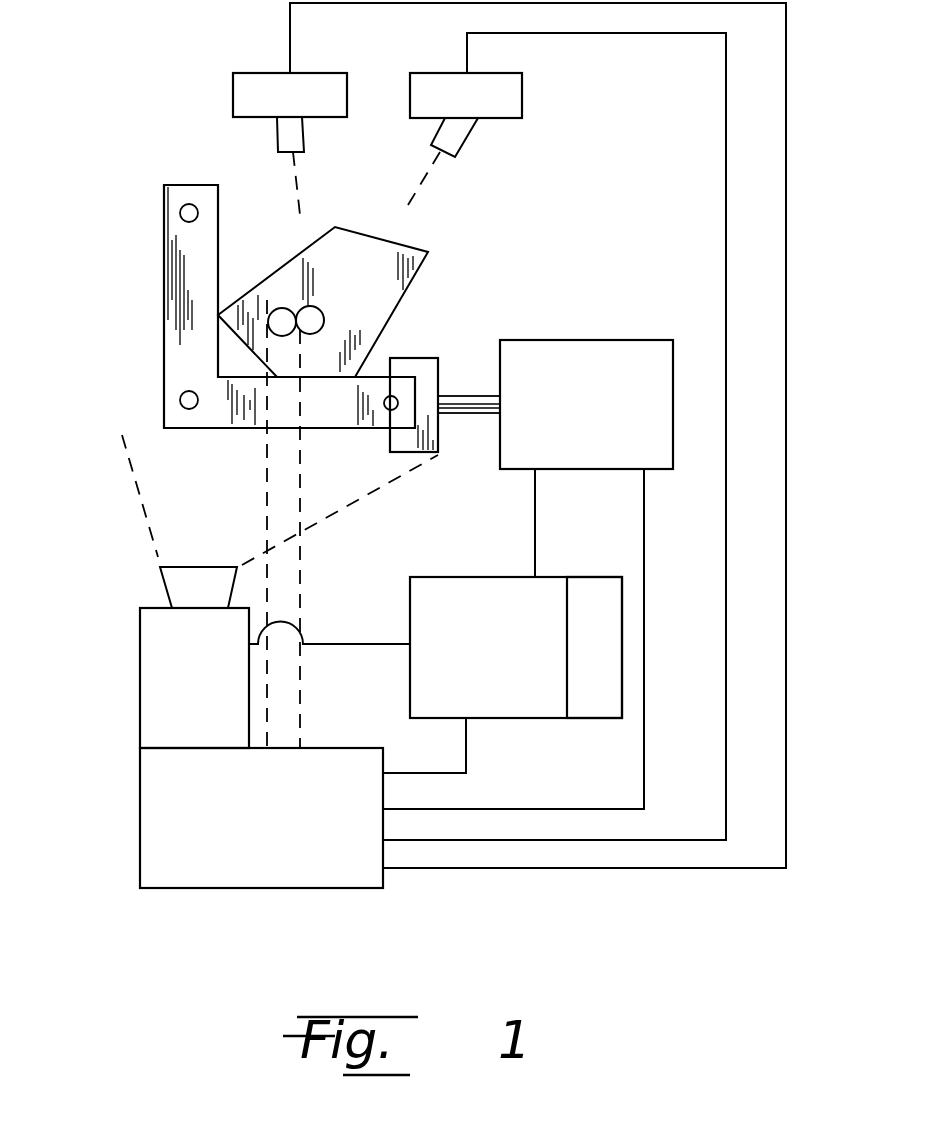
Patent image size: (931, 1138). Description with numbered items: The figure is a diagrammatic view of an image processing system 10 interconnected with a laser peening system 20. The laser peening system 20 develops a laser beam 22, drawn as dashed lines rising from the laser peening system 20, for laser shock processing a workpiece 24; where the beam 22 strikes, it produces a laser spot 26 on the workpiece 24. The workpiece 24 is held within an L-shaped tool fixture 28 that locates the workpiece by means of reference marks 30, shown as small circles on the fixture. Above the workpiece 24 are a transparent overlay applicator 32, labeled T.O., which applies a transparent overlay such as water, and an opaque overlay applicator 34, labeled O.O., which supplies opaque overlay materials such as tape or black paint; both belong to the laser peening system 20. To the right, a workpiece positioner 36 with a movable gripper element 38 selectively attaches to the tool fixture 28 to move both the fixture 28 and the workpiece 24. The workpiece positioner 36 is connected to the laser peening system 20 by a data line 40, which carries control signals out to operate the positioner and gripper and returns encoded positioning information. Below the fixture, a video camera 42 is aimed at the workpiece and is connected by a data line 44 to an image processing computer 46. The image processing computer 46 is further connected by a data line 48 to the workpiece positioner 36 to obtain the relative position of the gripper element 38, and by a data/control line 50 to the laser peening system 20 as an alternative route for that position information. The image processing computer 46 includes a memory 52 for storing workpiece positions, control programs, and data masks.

The image processing system 10 is at (98, 142).
The laser peening system 20 is at (148, 915).
The laser beam 22 is at (303, 501).
The workpiece 24 is at (428, 252).
The laser spot 26 is at (279, 311).
The tool fixture 28 is at (172, 328).
The reference marks 30 is at (180, 213).
The transparent overlay applicator 32 is at (245, 73).
The opaque overlay applicator 34 is at (522, 100).
The workpiece positioner 36 is at (645, 340).
The gripper element 38 is at (428, 452).
The data line 40 is at (644, 525).
The video camera 42 is at (140, 667).
The data line 44 is at (345, 644).
The image processing computer 46 is at (450, 588).
The data line 48 is at (535, 515).
The data/control line 50 is at (466, 755).
The memory 52 is at (605, 718).